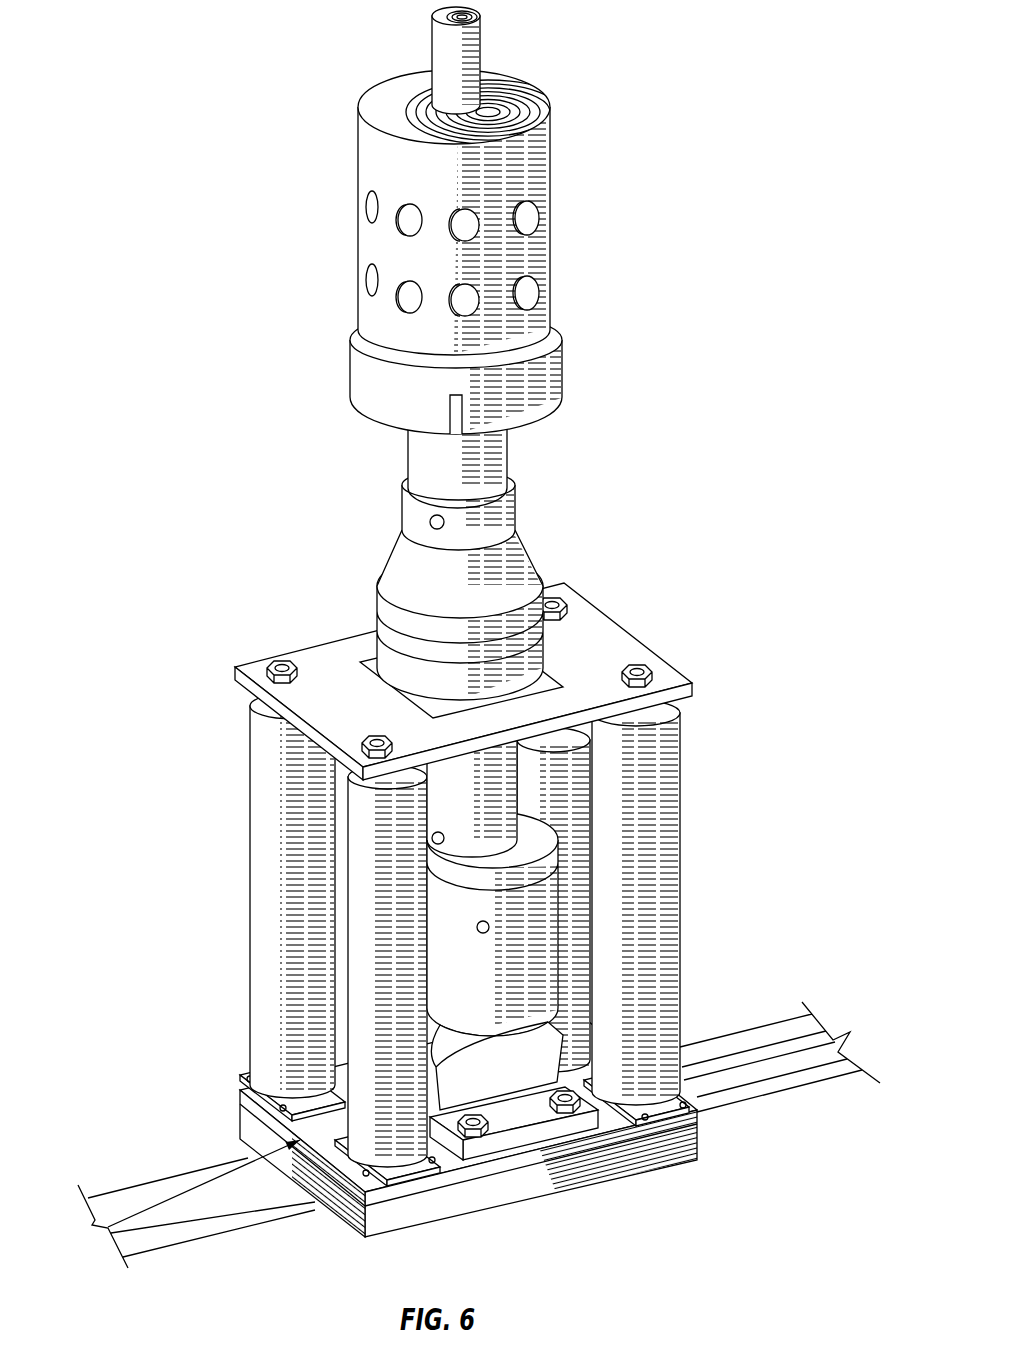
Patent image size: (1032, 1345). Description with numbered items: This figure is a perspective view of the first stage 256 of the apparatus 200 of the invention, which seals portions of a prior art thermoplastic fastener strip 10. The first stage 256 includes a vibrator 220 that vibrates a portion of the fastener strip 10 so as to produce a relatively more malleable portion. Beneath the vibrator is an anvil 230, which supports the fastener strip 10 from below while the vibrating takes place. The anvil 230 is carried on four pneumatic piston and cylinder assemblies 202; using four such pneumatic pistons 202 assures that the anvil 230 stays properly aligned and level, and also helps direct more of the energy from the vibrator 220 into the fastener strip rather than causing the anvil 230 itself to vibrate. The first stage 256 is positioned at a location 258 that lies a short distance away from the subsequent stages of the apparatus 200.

The thermoplastic fastener strip 10 is at (778, 1045).
The apparatus 200 is at (479, 637).
The pneumatic piston and cylinder assemblies 202 is at (258, 900).
The vibrator 220 is at (565, 600).
The anvil 230 is at (527, 1137).
The first stage 256 is at (307, 653).
The location 258 is at (243, 1102).